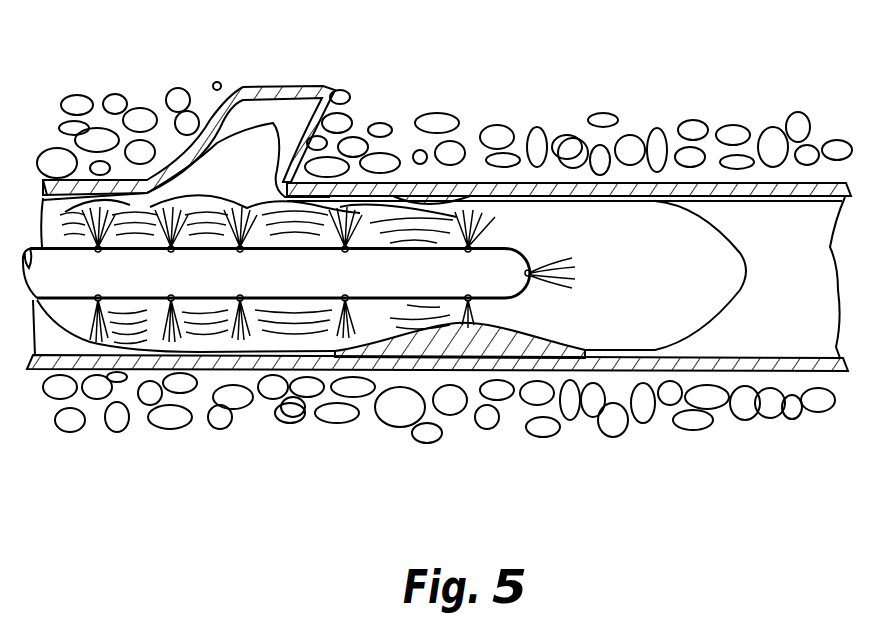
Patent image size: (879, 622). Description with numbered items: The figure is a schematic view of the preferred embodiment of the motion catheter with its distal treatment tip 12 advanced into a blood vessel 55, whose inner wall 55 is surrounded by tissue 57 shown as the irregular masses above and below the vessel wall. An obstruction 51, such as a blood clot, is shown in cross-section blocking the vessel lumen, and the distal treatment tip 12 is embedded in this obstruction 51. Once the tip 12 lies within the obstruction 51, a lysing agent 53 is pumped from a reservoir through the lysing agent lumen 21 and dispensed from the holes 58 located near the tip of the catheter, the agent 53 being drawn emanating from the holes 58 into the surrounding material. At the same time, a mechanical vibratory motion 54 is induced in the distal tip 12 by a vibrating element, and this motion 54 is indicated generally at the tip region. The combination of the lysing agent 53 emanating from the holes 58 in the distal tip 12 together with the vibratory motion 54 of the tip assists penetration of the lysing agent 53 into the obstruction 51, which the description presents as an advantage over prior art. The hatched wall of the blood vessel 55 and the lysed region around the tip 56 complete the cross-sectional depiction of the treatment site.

The distal treatment tip 12 is at (277, 283).
The lysing agent lumen 21 is at (532, 270).
The obstruction 51 is at (625, 328).
The lysing agent 53 is at (470, 245).
The vibratory motion 54 is at (200, 190).
The blood vessel 55 is at (690, 183).
The plaque 56 is at (470, 340).
The tissue 57 is at (97, 354).
The holes 58 is at (471, 301).